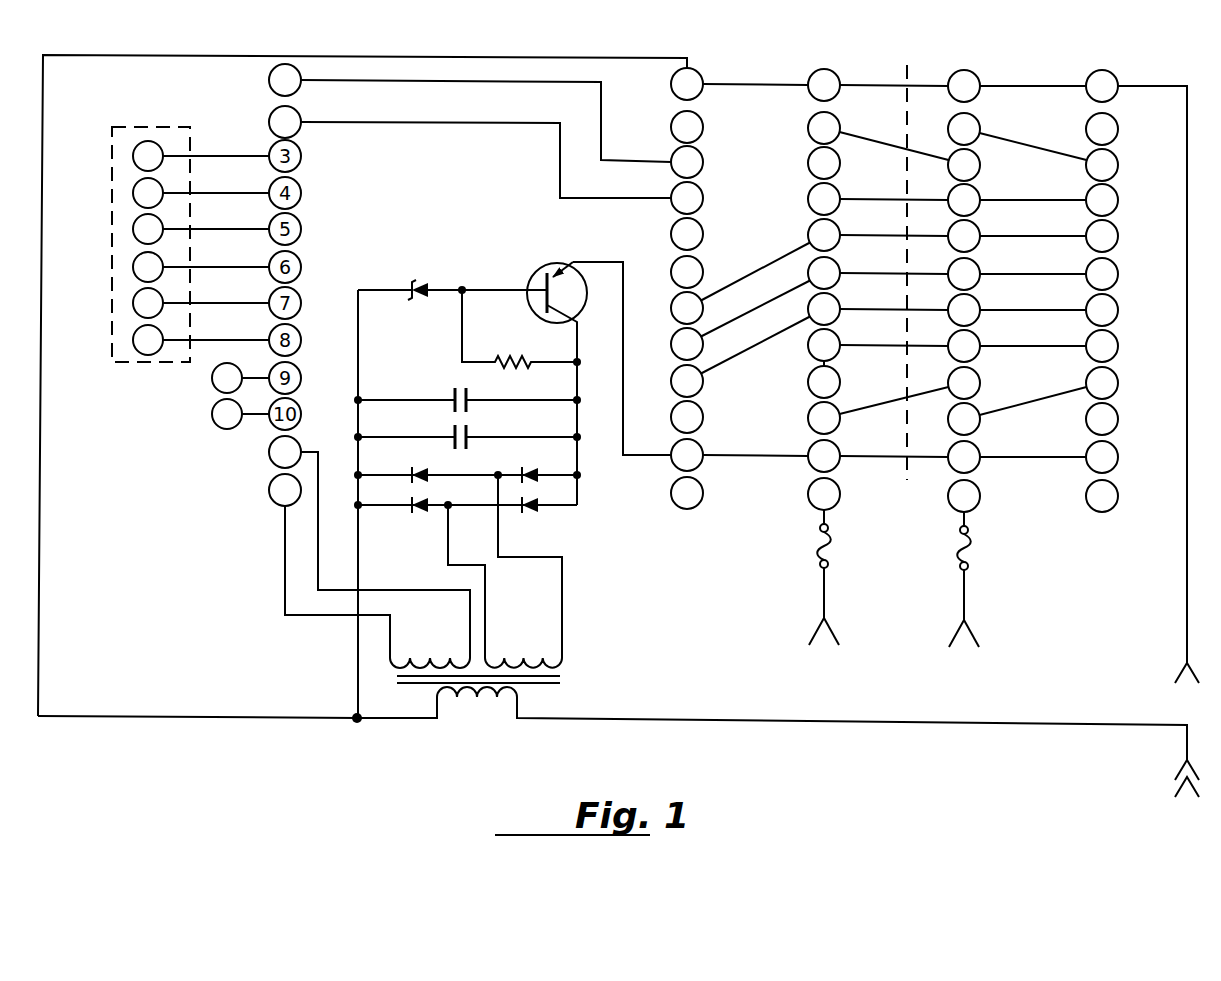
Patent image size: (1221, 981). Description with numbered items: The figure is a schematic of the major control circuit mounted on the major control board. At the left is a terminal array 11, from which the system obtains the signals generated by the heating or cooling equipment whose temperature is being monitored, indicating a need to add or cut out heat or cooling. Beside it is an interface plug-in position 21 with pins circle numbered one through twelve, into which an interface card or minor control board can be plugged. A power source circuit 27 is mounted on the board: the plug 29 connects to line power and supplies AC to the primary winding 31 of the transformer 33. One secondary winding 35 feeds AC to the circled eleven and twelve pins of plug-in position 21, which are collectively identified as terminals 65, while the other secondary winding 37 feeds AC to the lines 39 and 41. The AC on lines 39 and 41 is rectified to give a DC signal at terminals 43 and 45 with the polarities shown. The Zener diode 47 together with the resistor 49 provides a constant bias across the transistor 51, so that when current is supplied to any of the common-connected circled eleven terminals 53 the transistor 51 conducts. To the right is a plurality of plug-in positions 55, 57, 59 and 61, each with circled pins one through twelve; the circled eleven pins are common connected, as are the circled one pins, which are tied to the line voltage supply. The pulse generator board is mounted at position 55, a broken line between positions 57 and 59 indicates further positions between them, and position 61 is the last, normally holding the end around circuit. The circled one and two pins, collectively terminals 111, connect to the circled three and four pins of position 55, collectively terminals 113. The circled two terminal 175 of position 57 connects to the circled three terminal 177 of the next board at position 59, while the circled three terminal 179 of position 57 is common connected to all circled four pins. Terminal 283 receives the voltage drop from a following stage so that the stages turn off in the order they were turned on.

The terminal array 11 is at (120, 328).
The terminals 111 is at (269, 81).
The terminals 113 is at (702, 168).
The terminals 65 is at (268, 455).
The plug-in position 21 is at (289, 627).
The power source circuit 27 is at (478, 253).
The Zener diode 47 is at (428, 278).
The transistor 51 is at (536, 282).
The resistor 49 is at (515, 350).
The terminal 43 is at (358, 468).
The terminal 45 is at (577, 475).
The line 39 is at (478, 475).
The line 41 is at (479, 512).
The transformer 33 is at (575, 675).
The primary winding 31 is at (485, 700).
The secondary winding 35 is at (420, 660).
The secondary winding 37 is at (515, 660).
The plug-in position 55 is at (672, 514).
The plug-in position 57 is at (851, 514).
The plug-in position 59 is at (940, 512).
The plug-in position 61 is at (1100, 529).
The terminals 53 is at (808, 449).
The circled 2 terminal 175 is at (838, 122).
The circled 3 terminal 177 is at (980, 165).
The circled 3 terminal 179 is at (840, 164).
The terminal 283 is at (838, 369).
The plug 29 is at (1147, 747).